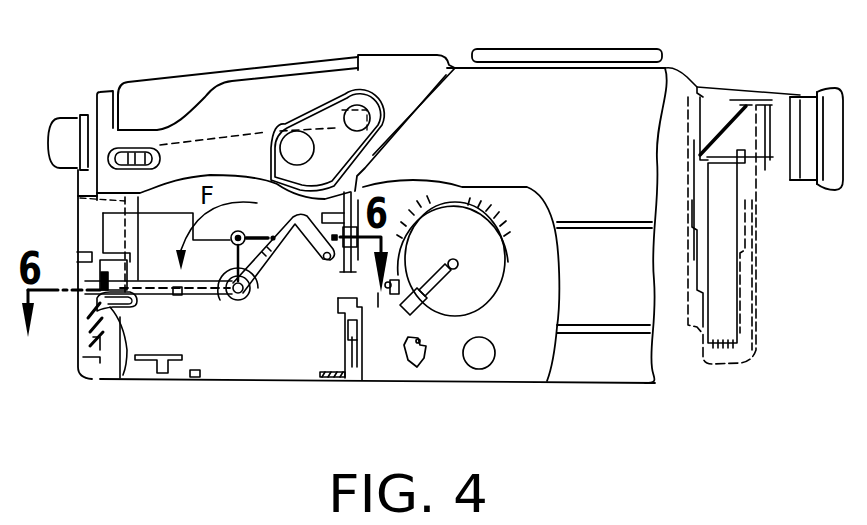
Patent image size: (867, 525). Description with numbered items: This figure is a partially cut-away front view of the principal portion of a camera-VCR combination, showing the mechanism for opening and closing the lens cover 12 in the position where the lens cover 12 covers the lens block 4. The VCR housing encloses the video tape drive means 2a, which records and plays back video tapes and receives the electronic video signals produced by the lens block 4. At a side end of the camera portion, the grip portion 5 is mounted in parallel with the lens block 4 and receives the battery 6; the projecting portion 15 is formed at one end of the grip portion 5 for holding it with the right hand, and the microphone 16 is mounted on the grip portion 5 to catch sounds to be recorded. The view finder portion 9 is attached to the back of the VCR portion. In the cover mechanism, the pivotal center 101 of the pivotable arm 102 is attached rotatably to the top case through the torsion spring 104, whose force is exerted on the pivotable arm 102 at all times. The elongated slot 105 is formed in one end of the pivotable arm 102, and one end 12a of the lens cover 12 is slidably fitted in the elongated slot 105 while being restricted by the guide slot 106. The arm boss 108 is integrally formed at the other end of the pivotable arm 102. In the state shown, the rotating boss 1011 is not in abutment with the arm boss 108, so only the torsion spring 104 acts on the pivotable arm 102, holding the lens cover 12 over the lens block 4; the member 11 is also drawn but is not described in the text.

The video tape drive means 2a is at (487, 283).
The lens block means 4 is at (217, 337).
The grip portion 5 is at (290, 97).
The battery 6 is at (153, 100).
The view finder portion 9 is at (805, 110).
The support member 11 is at (366, 328).
The lens cover 12 is at (85, 337).
The one end of the lens cover 12a is at (120, 343).
The projecting portion 15 is at (428, 72).
The microphone 16 is at (68, 127).
The pivotal center 101 is at (238, 300).
The pivotable arm 102 is at (177, 283).
The torsion spring 104 is at (258, 305).
The elongated slot 105 is at (110, 302).
The guide slot 106 is at (78, 195).
The arm boss 108 is at (325, 259).
The rotating boss 1011 is at (352, 195).